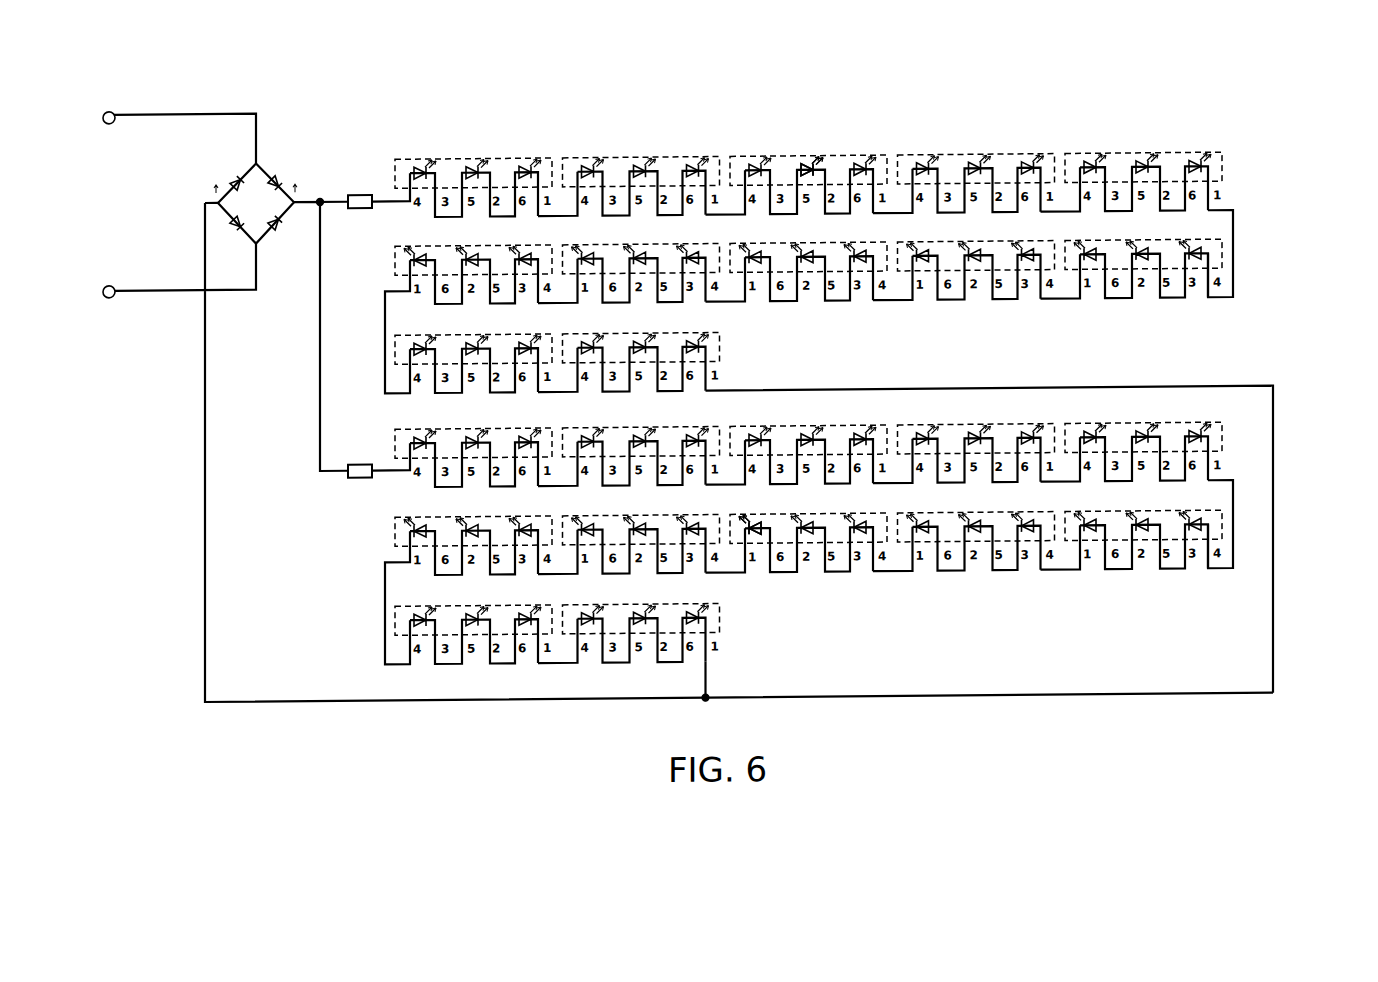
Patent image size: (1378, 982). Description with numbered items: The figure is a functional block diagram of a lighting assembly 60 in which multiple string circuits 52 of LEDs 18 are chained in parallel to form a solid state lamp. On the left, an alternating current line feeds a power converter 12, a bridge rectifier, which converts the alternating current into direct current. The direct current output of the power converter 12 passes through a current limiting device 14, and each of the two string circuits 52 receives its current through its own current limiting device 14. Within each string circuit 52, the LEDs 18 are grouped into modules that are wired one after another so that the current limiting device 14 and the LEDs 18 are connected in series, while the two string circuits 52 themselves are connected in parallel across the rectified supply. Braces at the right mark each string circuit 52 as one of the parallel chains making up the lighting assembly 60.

The power converter 12 is at (277, 152).
The current limiting device 14 is at (361, 214).
The LEDs 18 is at (804, 165).
The string circuits 52 is at (1284, 702).
The lighting assembly 60 is at (1195, 101).